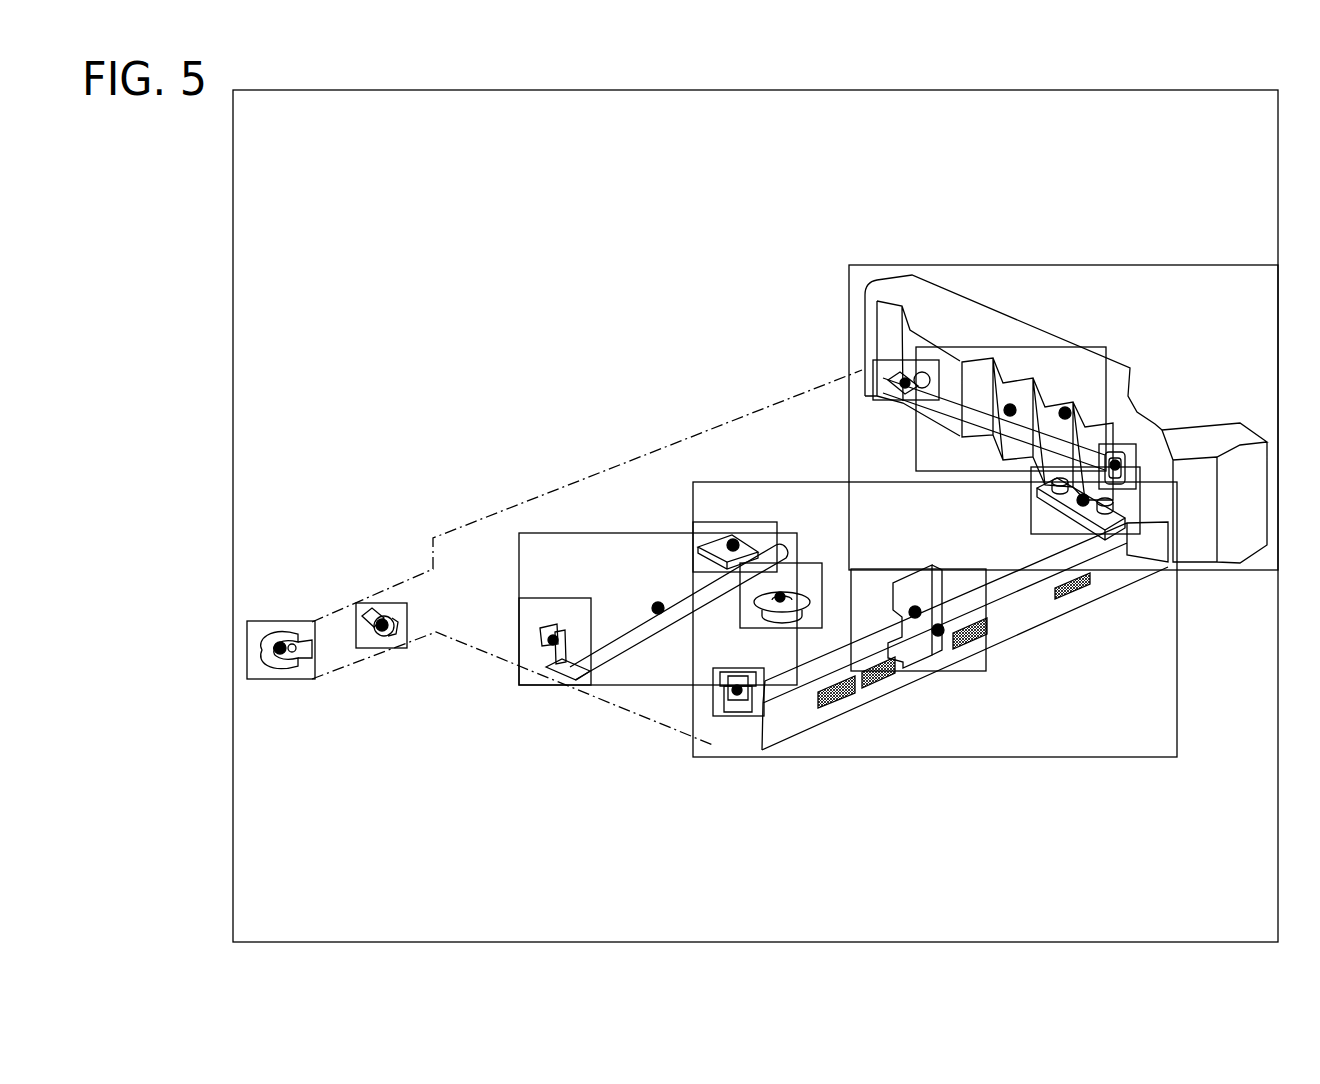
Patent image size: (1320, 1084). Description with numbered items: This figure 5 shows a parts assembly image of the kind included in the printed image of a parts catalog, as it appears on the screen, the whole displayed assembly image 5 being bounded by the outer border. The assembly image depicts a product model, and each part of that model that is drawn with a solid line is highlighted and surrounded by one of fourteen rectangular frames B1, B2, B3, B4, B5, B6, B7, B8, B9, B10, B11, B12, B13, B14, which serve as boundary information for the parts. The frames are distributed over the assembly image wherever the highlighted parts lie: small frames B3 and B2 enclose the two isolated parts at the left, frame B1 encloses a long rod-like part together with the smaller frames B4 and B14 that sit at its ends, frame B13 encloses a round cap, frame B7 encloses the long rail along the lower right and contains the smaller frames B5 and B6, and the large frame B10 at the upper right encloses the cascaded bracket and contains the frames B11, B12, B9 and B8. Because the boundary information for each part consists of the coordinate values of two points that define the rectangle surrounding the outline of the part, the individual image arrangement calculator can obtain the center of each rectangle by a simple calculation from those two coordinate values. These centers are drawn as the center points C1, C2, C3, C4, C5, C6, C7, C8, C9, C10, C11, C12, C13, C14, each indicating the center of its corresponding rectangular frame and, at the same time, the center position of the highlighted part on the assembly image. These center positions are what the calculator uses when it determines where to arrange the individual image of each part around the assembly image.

The input image 5 is at (1278, 148).
The rectangular frame B1 is at (560, 533).
The rectangular frame B2 is at (385, 603).
The rectangular frame B3 is at (287, 621).
The rectangular frame B4 is at (545, 685).
The rectangular frame B5 is at (762, 716).
The rectangular frame B6 is at (986, 672).
The rectangular frame B7 is at (1115, 758).
The rectangular frame B8 is at (1034, 531).
The rectangular frame B9 is at (1137, 452).
The rectangular frame B10 is at (1148, 265).
The rectangular frame B11 is at (967, 347).
The rectangular frame B12 is at (875, 360).
The rectangular frame B13 is at (822, 563).
The rectangular frame B14 is at (735, 522).
The center point C1 is at (656, 606).
The center point C2 is at (383, 631).
The center point C3 is at (282, 652).
The center point C4 is at (553, 643).
The center point C5 is at (737, 695).
The center point C6 is at (915, 618).
The center point C7 is at (938, 636).
The center point C8 is at (1078, 501).
The center point C9 is at (1120, 465).
The center point C10 is at (1066, 410).
The center point C11 is at (1012, 408).
The center point C12 is at (900, 382).
The center point C13 is at (778, 612).
The center point C14 is at (730, 545).